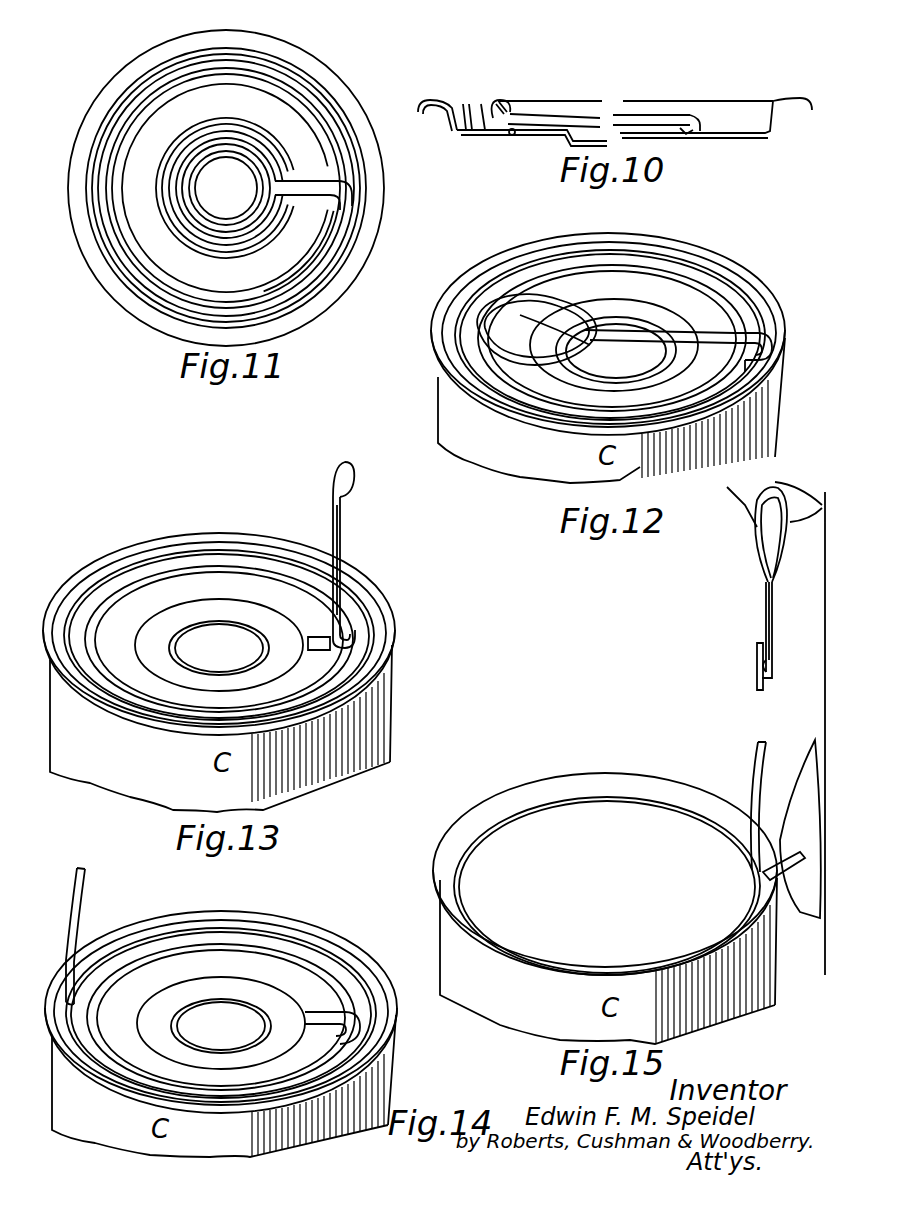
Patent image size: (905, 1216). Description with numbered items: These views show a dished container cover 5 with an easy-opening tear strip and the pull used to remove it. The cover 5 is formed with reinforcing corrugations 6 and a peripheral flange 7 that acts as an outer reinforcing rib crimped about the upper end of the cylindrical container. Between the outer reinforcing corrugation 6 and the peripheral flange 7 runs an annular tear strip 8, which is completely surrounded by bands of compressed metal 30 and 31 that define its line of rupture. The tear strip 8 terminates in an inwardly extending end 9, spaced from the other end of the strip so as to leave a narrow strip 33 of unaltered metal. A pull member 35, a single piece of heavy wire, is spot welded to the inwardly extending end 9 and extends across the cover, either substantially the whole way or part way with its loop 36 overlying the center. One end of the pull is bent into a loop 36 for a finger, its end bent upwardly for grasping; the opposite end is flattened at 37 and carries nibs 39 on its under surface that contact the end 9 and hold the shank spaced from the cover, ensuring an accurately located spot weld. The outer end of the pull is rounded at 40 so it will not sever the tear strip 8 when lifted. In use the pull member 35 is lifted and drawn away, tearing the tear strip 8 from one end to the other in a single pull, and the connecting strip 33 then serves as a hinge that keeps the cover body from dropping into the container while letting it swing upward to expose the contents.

In FIG. 11, the dished cover 5 is at (86, 92).
In FIG. 12, the dished cover 5 is at (608, 334).
In FIG. 13, the dished cover 5 is at (219, 634).
In FIG. 14, the dished cover 5 is at (221, 1012).
In FIG. 15, the dished cover 5 is at (800, 829).
In FIG. 11, the reinforcing corrugations 6 is at (312, 248).
In FIG. 10, the reinforcing corrugations 6 is at (511, 136).
In FIG. 12, the reinforcing corrugations 6 is at (476, 356).
In FIG. 13, the reinforcing corrugations 6 is at (187, 567).
In FIG. 14, the reinforcing corrugations 6 is at (303, 960).
In FIG. 11, the peripheral flange 7 is at (365, 230).
In FIG. 10, the peripheral flange 7 is at (446, 104).
In FIG. 12, the peripheral flange 7 is at (474, 333).
In FIG. 13, the peripheral flange 7 is at (147, 542).
In FIG. 14, the peripheral flange 7 is at (297, 918).
In FIG. 15, the peripheral flange 7 is at (485, 810).
In FIG. 11, the annular tear strip 8 is at (338, 150).
In FIG. 10, the annular tear strip 8 is at (476, 128).
In FIG. 12, the annular tear strip 8 is at (740, 318).
In FIG. 14, the annular tear strip 8 is at (85, 878).
In FIG. 15, the annular tear strip 8 is at (755, 760).
In FIG. 11, the inwardly extending end 9 is at (352, 193).
In FIG. 11, the band of compressed metal 30 is at (303, 88).
In FIG. 10, the band of compressed metal 30 is at (462, 128).
In FIG. 12, the band of compressed metal 30 is at (740, 347).
In FIG. 13, the band of compressed metal 30 is at (372, 650).
In FIG. 14, the band of compressed metal 30 is at (373, 1030).
In FIG. 15, the band of compressed metal 30 is at (463, 865).
In FIG. 11, the band of compressed metal 31 is at (267, 83).
In FIG. 10, the band of compressed metal 31 is at (490, 126).
In FIG. 12, the band of compressed metal 31 is at (740, 363).
In FIG. 13, the band of compressed metal 31 is at (352, 667).
In FIG. 14, the band of compressed metal 31 is at (352, 1052).
In FIG. 11, the narrow strip of unaltered metal 33 is at (350, 182).
In FIG. 14, the narrow strip of unaltered metal 33 is at (367, 1012).
In FIG. 15, the narrow strip of unaltered metal 33 is at (763, 877).
In FIG. 11, the pull member 35 is at (292, 182).
In FIG. 10, the pull member 35 is at (592, 116).
In FIG. 12, the pull member 35 is at (647, 335).
In FIG. 13, the pull member 35 is at (337, 577).
In FIG. 11, the loop 36 is at (223, 133).
In FIG. 10, the loop 36 is at (520, 110).
In FIG. 12, the loop 36 is at (510, 308).
In FIG. 13, the loop 36 is at (349, 500).
In FIG. 10, the flattened end 37 is at (665, 118).
In FIG. 12, the flattened end 37 is at (697, 333).
In FIG. 10, the nibs 39 is at (686, 134).
In FIG. 12, the nibs 39 is at (768, 660).
In FIG. 13, the nibs 39 is at (340, 637).
In FIG. 10, the rounded outer end 40 is at (700, 125).
In FIG. 12, the rounded outer end 40 is at (750, 335).
In FIG. 13, the rounded outer end 40 is at (356, 640).